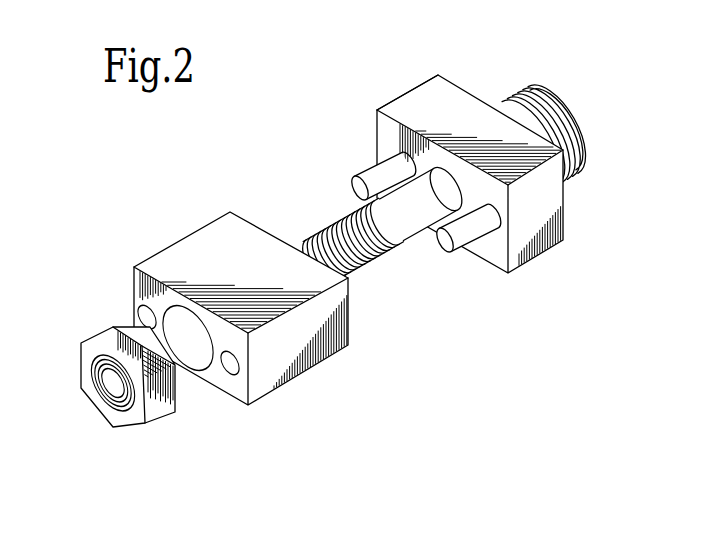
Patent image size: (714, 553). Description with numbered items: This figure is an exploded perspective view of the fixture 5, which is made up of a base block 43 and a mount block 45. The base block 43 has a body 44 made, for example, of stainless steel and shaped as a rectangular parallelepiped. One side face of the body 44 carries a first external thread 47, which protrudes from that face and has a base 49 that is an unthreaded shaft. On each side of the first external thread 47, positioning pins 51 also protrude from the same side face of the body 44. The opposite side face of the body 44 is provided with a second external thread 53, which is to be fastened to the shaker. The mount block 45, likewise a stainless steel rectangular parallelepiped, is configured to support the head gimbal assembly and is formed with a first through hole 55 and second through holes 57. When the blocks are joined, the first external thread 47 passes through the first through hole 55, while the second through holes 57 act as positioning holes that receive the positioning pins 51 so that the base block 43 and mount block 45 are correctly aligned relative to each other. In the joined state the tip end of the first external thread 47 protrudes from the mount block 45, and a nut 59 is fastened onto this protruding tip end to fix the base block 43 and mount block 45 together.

The fixture 5 is at (313, 99).
The base block 43 is at (441, 67).
The body 44 is at (403, 94).
The mount block 45 is at (174, 238).
The first external thread 47 is at (385, 256).
The base 49 is at (423, 232).
The positioning pins 51 is at (356, 184).
The second external thread 53 is at (550, 90).
The first through hole 55 is at (194, 353).
The second through holes 57 is at (135, 296).
The nut 59 is at (128, 430).